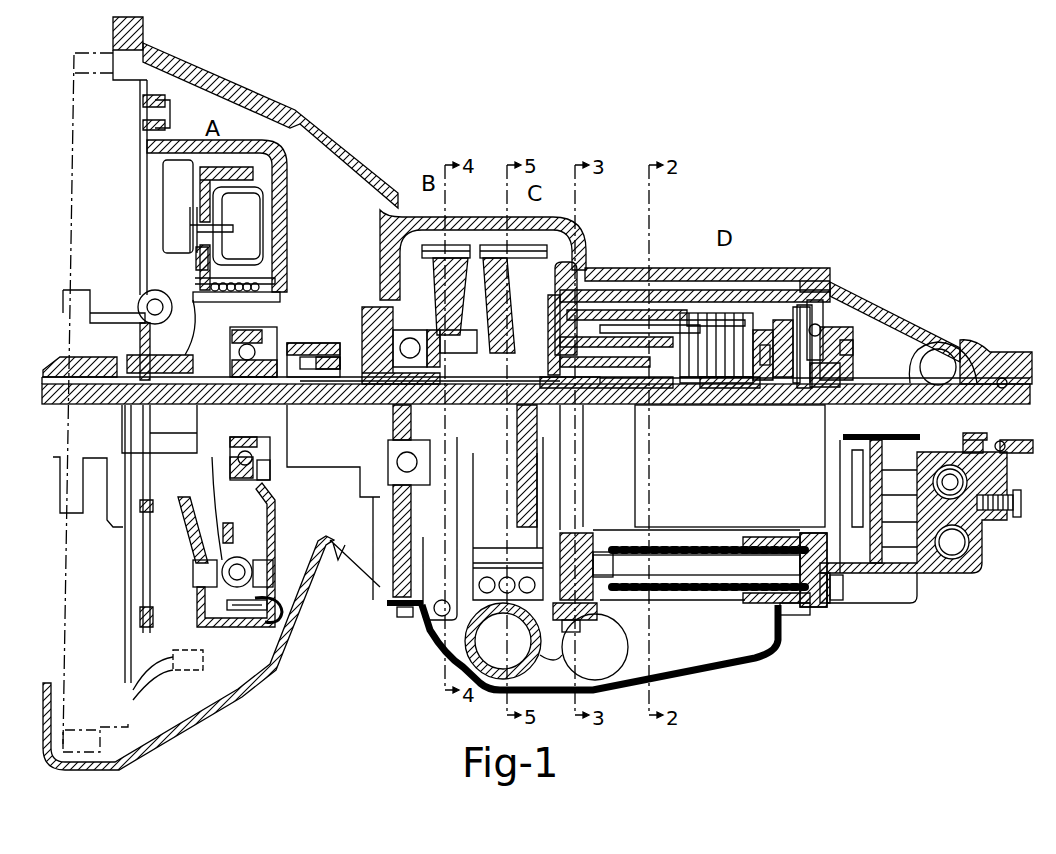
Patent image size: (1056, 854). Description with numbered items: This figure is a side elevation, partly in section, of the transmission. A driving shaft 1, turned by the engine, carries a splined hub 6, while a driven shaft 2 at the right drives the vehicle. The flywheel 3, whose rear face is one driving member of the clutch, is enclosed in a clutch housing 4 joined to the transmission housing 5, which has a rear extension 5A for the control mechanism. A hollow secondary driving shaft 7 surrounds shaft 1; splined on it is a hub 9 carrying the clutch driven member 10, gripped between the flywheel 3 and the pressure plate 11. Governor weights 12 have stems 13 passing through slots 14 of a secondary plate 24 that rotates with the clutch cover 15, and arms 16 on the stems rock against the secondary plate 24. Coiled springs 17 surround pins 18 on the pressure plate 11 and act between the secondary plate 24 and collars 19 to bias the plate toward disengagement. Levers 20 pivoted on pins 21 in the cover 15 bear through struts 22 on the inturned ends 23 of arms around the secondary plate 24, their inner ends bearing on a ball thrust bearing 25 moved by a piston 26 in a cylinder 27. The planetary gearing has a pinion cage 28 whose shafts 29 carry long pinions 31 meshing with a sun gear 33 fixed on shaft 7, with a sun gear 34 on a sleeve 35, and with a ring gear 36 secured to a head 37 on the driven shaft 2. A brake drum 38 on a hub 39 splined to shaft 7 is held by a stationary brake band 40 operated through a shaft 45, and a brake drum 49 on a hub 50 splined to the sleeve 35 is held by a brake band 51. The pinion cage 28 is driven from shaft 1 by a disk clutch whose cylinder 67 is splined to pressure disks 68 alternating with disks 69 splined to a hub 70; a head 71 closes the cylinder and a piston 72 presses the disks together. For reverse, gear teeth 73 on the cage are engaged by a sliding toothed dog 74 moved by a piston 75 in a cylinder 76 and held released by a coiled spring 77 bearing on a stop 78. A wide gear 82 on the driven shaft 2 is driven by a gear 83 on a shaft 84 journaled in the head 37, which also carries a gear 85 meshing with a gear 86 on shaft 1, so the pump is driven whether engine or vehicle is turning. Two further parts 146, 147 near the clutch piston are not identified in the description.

The driving shaft 1 is at (82, 405).
The driven shaft 2 is at (920, 340).
The flywheel 3 is at (72, 218).
The clutch housing 4 is at (258, 102).
The transmission housing 5 is at (422, 222).
The extension 5A is at (890, 310).
The hub 6 is at (95, 357).
The secondary driving shaft 7 is at (350, 401).
The hub 9 is at (178, 360).
The clutch driven member 10 is at (143, 216).
The pressure plate 11 is at (170, 168).
The governor weights 12 is at (258, 230).
The stems 13 is at (215, 222).
The slots 14 is at (195, 260).
The clutch cover 15 is at (285, 243).
The arms 16 is at (190, 235).
The coiled spring 17 is at (262, 282).
The pins 18 is at (275, 288).
The collars 19 is at (280, 298).
The levers 20 is at (275, 507).
The pins 21 is at (245, 560).
The struts 22 is at (247, 622).
The inturned ends 23 is at (270, 616).
The secondary plate 24 is at (190, 550).
The ball thrust bearing 25 is at (262, 333).
The piston 26 is at (325, 350).
The cylinder 27 is at (322, 345).
The pinion cage 28 is at (575, 310).
The shafts 29 is at (628, 300).
The long pinions 31 is at (582, 320).
The sun gear 33 is at (647, 405).
The sun gear 34 is at (590, 405).
The sleeve 35 is at (553, 406).
The ring gear 36 is at (665, 310).
The head 37 is at (815, 300).
The brake drum 38 is at (450, 300).
The hub 39 is at (438, 405).
The brake band 40 is at (460, 245).
The shaft 45 is at (440, 614).
The brake drum 49 is at (507, 340).
The hub 50 is at (478, 421).
The brake band 51 is at (535, 245).
The cylinder 67 is at (720, 315).
The pressure disks 68 is at (750, 320).
The pressure disks 69 is at (700, 390).
The hub 70 is at (705, 400).
The head 71 is at (770, 395).
The piston 72 is at (760, 395).
The gear teeth 73 is at (566, 290).
The sliding toothed dog 74 is at (612, 606).
The piston 75 is at (790, 616).
The cylinder 76 is at (748, 615).
The coiled spring 77 is at (670, 590).
The stop 78 is at (598, 546).
The wide gear 82 is at (822, 445).
The gear 83 is at (845, 330).
The shaft 84 is at (830, 320).
The gear 85 is at (780, 395).
The gear 86 is at (790, 395).
The spring 146 is at (810, 395).
The ring 147 is at (725, 395).